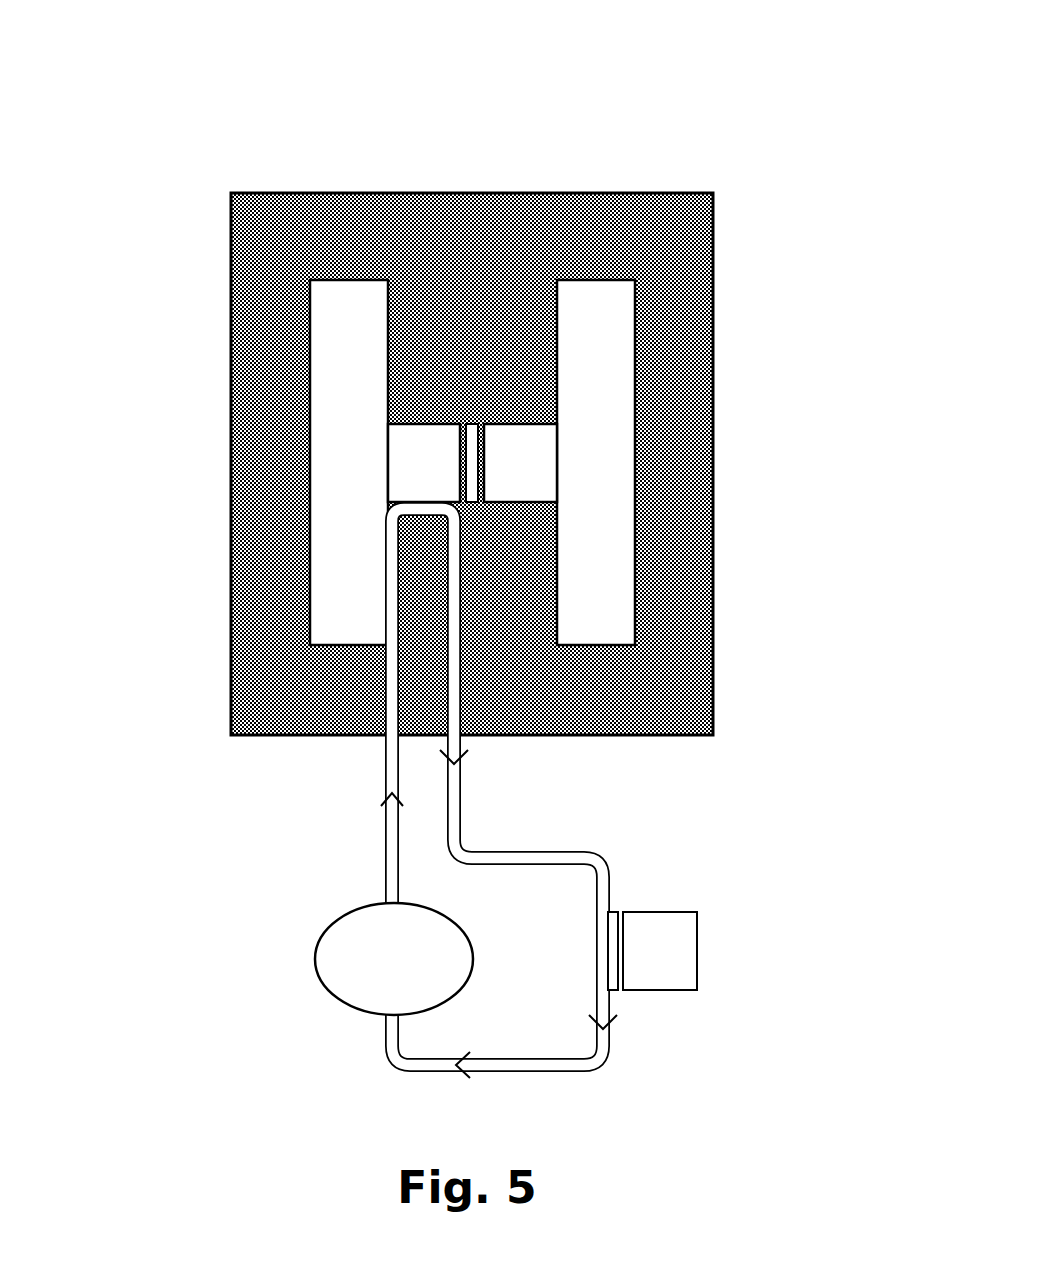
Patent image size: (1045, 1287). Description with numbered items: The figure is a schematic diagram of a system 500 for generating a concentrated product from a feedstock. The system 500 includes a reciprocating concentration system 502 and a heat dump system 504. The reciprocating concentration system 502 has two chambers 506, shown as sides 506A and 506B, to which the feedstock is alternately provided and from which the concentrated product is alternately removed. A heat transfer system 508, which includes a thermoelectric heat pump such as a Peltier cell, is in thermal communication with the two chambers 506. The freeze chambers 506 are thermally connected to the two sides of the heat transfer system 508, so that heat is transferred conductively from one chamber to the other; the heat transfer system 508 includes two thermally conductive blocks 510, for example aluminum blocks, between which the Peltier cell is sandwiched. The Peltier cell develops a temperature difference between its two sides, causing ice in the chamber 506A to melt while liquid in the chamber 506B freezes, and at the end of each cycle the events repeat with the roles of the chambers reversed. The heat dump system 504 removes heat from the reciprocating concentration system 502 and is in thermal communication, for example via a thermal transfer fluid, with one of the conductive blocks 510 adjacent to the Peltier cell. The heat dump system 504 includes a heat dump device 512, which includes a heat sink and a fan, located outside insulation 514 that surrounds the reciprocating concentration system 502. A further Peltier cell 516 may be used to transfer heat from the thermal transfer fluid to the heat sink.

The system 500 is at (435, 551).
The reciprocating concentration system 502 is at (428, 418).
The heat dump system 504 is at (435, 793).
The chambers 506 is at (615, 473).
The side of chamber 506A is at (322, 125).
The side of chamber 506B is at (620, 122).
The heat transfer system 508 is at (484, 404).
The thermally conductive blocks 510 is at (527, 470).
The heat dump device 512 is at (722, 933).
The insulation 514 is at (499, 722).
The Peltier cell 516 is at (619, 890).